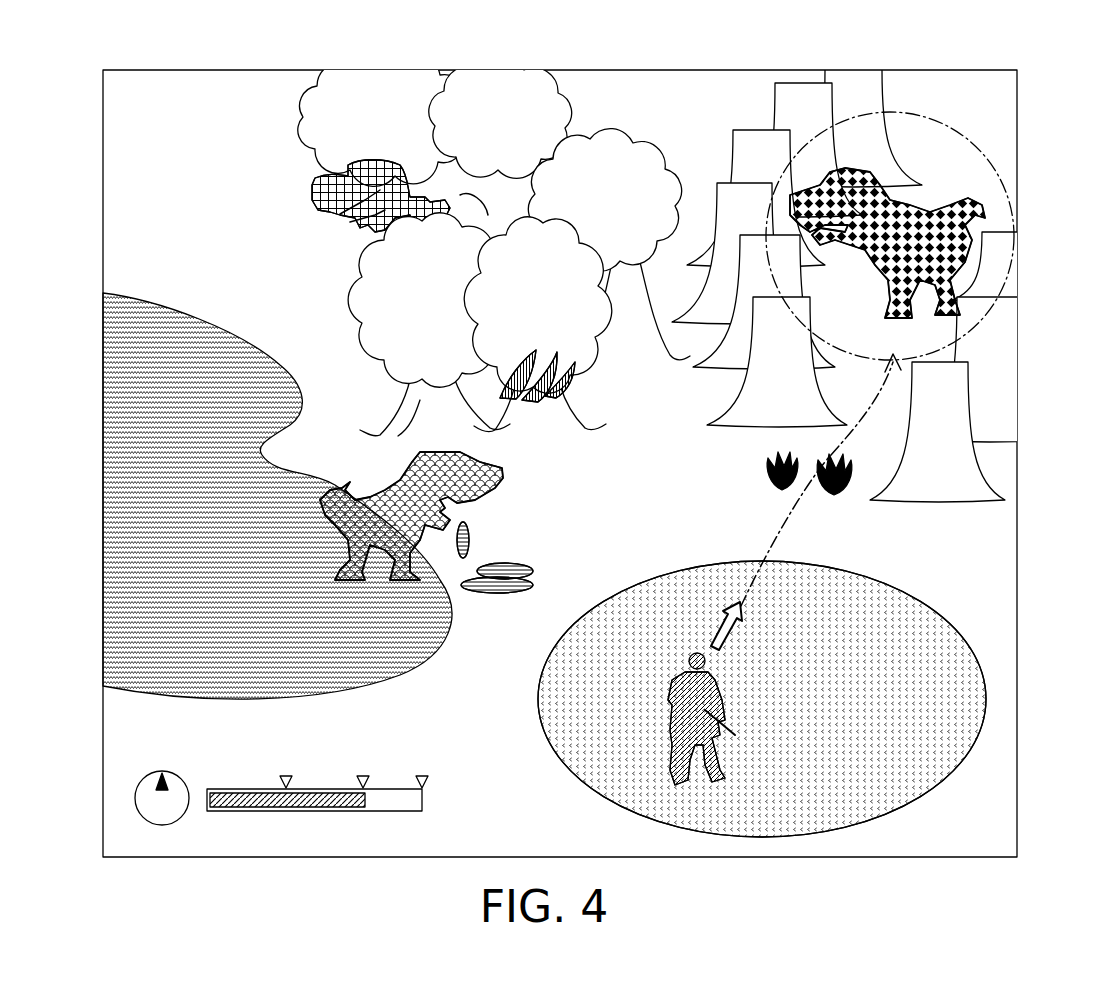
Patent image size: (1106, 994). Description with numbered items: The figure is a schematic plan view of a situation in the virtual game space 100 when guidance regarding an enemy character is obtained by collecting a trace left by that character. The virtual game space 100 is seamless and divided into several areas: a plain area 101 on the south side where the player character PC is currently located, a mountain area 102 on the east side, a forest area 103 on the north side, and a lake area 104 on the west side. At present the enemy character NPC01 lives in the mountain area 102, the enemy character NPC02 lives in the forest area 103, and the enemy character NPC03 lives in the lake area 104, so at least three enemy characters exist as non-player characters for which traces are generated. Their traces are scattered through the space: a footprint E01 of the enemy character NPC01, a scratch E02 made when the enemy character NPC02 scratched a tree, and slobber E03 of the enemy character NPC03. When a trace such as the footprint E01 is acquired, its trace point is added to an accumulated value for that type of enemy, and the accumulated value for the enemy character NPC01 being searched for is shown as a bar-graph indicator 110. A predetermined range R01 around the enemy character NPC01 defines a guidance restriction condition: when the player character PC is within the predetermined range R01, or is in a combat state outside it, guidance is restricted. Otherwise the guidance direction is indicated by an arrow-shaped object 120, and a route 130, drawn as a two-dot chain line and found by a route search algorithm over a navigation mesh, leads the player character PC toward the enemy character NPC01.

The virtual game space 100 is at (200, 92).
The plain area 101 is at (570, 774).
The mountain area 102 is at (978, 110).
The forest area 103 is at (459, 242).
The lake area 104 is at (182, 290).
The indicator 110 is at (385, 812).
The arrow-shaped object 120 is at (746, 612).
The route 130 is at (777, 530).
The footprint E01 is at (820, 497).
The scratch E02 is at (574, 386).
The slobber E03 is at (521, 560).
The enemy character NPC01 is at (876, 292).
The enemy character NPC02 is at (318, 182).
The enemy character NPC03 is at (400, 478).
The player character PC is at (725, 682).
The predetermined range R01 is at (1004, 160).